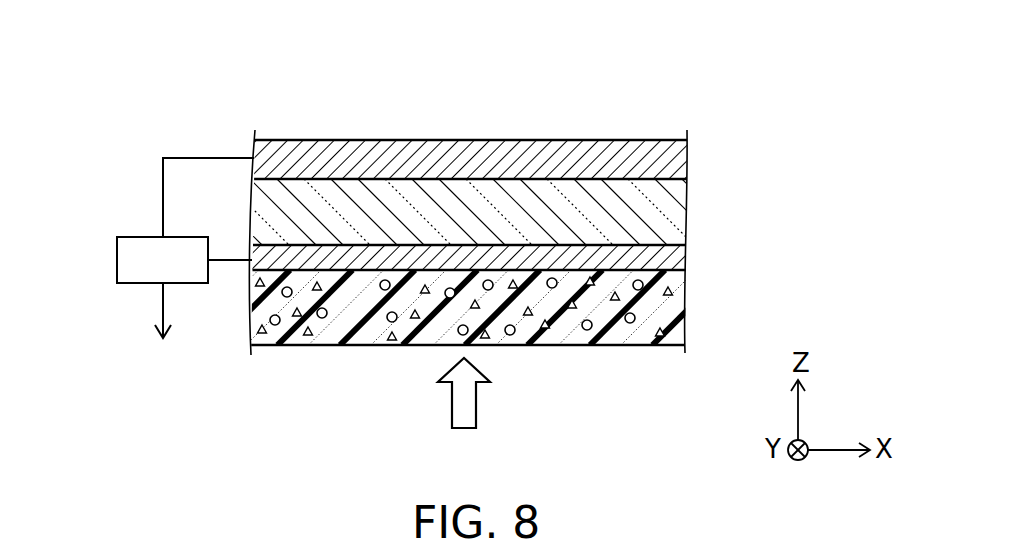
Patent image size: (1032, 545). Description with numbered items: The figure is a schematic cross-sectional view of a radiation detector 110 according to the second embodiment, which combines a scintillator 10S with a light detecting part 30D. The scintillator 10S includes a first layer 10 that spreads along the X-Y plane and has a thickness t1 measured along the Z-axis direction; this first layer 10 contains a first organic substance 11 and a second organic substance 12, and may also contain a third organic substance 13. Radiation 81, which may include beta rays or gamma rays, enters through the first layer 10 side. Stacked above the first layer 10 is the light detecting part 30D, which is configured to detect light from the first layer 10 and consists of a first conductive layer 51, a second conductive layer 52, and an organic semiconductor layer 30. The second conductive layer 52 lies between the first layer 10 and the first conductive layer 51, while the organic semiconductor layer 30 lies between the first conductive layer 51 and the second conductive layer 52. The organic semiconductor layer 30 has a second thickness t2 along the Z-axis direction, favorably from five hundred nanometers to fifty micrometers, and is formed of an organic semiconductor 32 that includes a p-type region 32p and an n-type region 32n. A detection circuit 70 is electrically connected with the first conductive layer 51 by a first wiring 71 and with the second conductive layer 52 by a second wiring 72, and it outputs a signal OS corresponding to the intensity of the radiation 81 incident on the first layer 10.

The radiation detector 110 is at (816, 137).
The first layer 10 is at (456, 340).
The scintillator 10S is at (696, 286).
The first organic substance 11 is at (513, 340).
The second organic substance 12 is at (546, 335).
The third organic substance 13 is at (613, 335).
The organic semiconductor layer 30 is at (686, 208).
The light detecting part 30D is at (768, 122).
The organic semiconductor 32 is at (652, 91).
The p-type region 32p is at (570, 205).
The n-type region 32n is at (628, 205).
The first conductive layer 51 is at (686, 160).
The second conductive layer 52 is at (686, 258).
The detection circuit 70 is at (140, 237).
The first wiring 71 is at (163, 178).
The second wiring 72 is at (232, 262).
The radiation 81 is at (452, 403).
The signal OS is at (163, 304).
The thickness t1 is at (355, 272).
The second thickness t2 is at (355, 243).